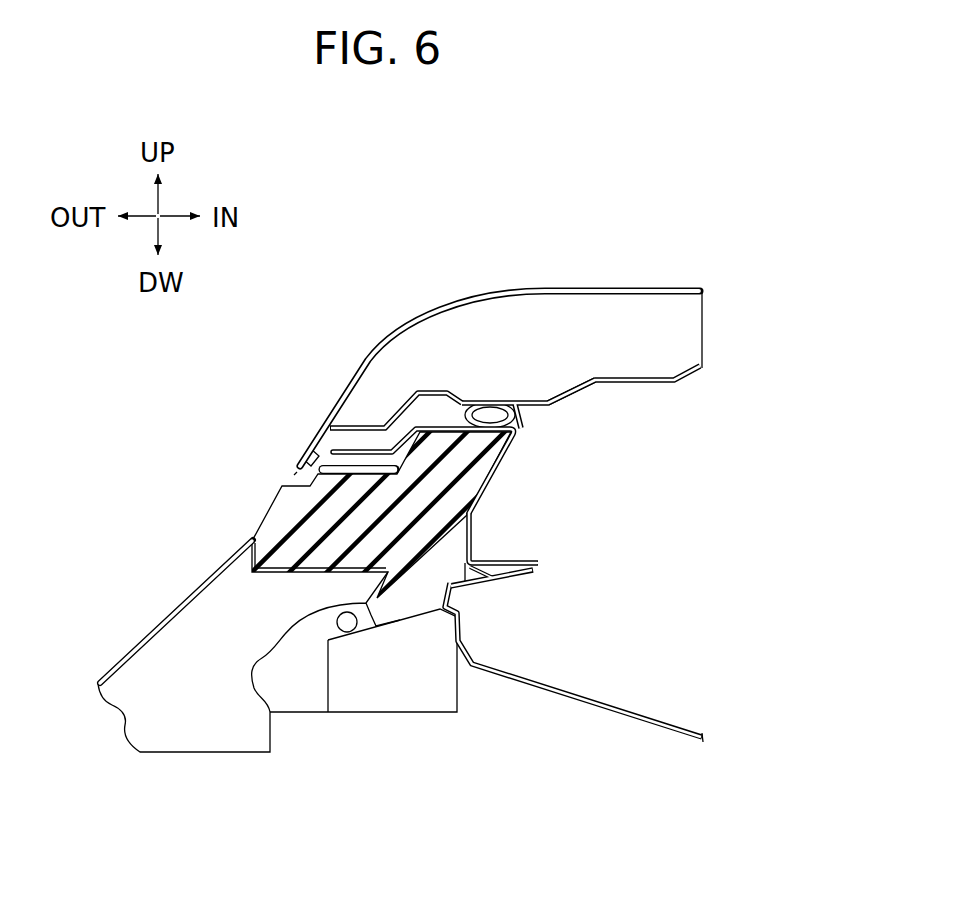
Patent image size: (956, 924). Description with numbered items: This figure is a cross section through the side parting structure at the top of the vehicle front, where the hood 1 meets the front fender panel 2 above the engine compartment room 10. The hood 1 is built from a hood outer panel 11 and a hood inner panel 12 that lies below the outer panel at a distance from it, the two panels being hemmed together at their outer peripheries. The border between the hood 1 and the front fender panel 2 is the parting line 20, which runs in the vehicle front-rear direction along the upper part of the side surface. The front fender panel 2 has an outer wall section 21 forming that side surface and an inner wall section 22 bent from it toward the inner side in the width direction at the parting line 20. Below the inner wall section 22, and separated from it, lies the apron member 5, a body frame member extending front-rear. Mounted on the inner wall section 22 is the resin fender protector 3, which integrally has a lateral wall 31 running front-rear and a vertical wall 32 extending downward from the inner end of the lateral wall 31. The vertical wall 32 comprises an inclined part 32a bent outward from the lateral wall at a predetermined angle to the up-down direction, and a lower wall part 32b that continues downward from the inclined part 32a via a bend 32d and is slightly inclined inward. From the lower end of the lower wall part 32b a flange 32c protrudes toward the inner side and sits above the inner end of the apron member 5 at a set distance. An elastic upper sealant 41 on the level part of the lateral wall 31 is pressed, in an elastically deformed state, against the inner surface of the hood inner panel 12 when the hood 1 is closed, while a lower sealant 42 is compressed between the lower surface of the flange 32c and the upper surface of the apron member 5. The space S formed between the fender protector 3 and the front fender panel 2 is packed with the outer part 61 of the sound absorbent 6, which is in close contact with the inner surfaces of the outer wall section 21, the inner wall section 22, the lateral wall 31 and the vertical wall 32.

The hood 1 is at (454, 330).
The hood outer panel 11 is at (453, 300).
The outer part 61 is at (448, 465).
The parting line 20 is at (290, 470).
The fender protector 3 is at (515, 330).
The lateral wall 31 is at (433, 424).
The hood inner panel 12 is at (593, 383).
The upper sealant 41 is at (511, 403).
The space S is at (401, 466).
The vertical wall 32 is at (486, 514).
The inclined part 32a is at (513, 453).
The lower wall part 32b is at (473, 533).
The flange 32c is at (508, 557).
The bend 32d is at (470, 513).
The front fender panel 2 is at (246, 600).
The outer wall section 21 is at (237, 545).
The inner wall section 22 is at (325, 479).
The sound absorbent 6 is at (300, 578).
The apron member 5 is at (488, 593).
The lower sealant 42 is at (510, 577).
The engine compartment room 10 is at (703, 565).